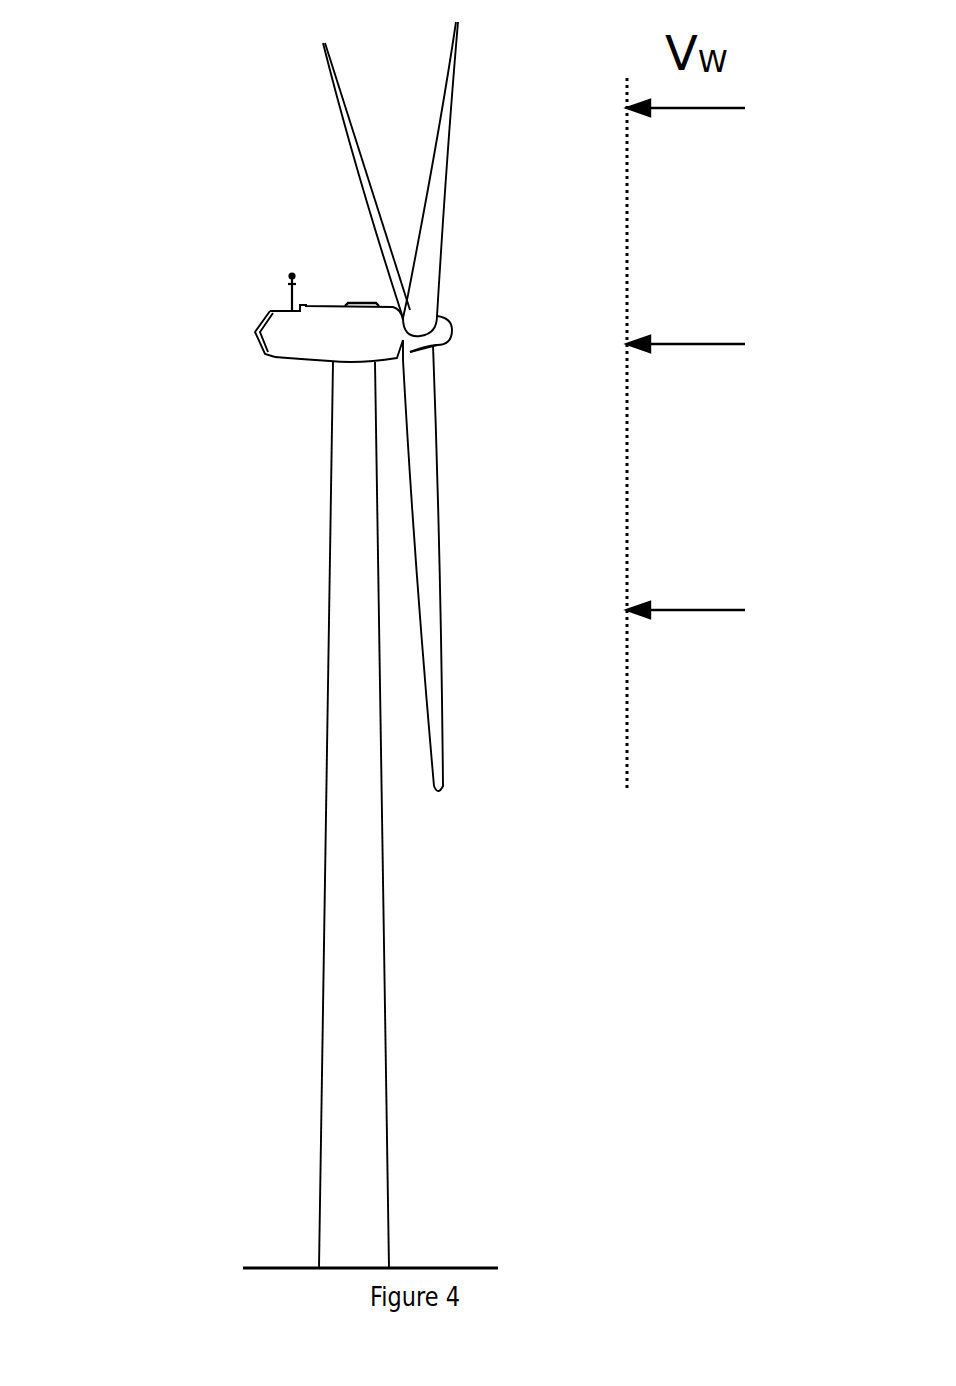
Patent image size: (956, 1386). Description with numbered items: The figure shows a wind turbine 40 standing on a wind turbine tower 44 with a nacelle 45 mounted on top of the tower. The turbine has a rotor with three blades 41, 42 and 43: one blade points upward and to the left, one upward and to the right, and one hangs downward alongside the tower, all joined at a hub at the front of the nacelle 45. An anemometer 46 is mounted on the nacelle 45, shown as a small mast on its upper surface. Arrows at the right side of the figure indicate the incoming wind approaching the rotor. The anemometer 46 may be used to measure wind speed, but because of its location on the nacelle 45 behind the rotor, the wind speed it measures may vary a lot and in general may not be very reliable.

The wind turbine 40 is at (230, 120).
The blade 41 is at (420, 403).
The blade 42 is at (432, 214).
The blade 43 is at (383, 228).
The wind turbine tower 44 is at (360, 787).
The nacelle 45 is at (318, 343).
The anemometer 46 is at (272, 283).